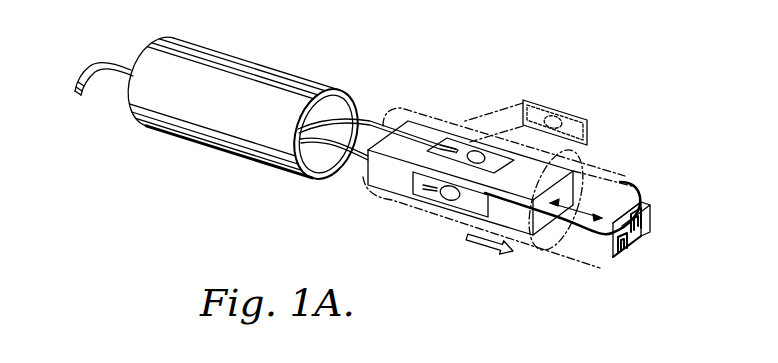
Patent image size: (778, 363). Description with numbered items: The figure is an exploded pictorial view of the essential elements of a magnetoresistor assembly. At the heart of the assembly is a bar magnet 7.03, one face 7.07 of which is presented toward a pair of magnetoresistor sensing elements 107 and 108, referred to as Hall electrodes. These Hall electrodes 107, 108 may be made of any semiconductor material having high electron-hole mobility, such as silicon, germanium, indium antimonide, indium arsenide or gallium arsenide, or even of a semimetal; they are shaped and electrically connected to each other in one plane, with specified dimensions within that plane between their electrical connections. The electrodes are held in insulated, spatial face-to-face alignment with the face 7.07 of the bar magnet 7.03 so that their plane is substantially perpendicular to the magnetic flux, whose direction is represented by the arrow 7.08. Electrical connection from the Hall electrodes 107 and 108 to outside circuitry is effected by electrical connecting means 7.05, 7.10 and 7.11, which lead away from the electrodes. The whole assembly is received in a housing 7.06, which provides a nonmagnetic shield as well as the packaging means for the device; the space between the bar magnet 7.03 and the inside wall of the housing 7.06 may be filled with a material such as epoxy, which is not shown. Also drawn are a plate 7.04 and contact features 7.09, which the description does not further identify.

The housing 7.06 is at (230, 53).
The electrical connecting means 7.10 is at (366, 128).
The bar magnet 7.03 is at (457, 140).
The electrical connecting means 7.05 is at (423, 200).
The cover plate 7.04 is at (558, 110).
The face of the bar magnet 7.07 is at (583, 170).
The arrow representing magnetic flux 7.08 is at (585, 207).
The electrical connecting means 7.11 is at (570, 173).
The magnetoresistor sensing element (Hall electrode) 107 is at (654, 206).
The contact springs 7.09 is at (632, 242).
The magnetoresistor sensing element (Hall electrode) 108 is at (618, 242).